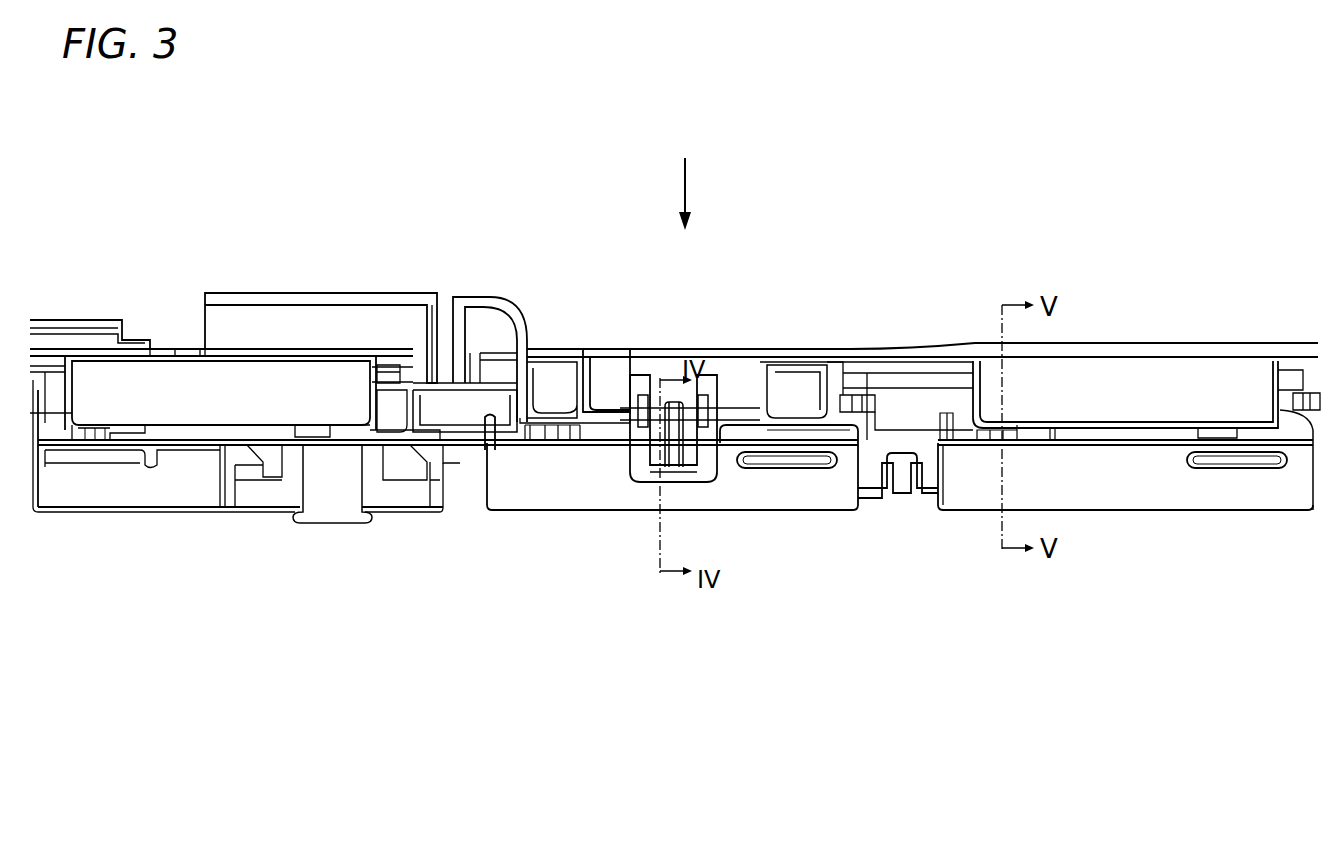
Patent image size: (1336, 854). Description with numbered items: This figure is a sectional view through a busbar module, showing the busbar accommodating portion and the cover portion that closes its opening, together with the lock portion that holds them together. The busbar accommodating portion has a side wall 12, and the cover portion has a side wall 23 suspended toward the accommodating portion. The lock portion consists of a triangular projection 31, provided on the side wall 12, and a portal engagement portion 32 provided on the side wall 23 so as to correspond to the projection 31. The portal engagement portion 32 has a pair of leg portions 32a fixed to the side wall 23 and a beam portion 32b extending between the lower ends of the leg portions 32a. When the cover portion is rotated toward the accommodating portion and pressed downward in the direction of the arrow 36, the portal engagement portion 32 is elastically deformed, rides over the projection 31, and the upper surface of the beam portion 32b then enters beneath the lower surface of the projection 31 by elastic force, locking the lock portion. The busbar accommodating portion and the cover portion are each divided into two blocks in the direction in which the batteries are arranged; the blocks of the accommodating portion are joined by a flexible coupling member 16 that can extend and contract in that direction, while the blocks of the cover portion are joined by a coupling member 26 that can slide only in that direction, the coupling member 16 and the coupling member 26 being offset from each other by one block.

The side wall 12 is at (566, 490).
The coupling member 16 is at (900, 494).
The side wall 23 is at (605, 372).
The coupling member 26 is at (447, 288).
The projection 31 is at (678, 450).
The portal engagement portion 32 is at (683, 427).
The leg portions 32a is at (705, 435).
The beam portion 32b is at (677, 480).
The arrow 36 is at (689, 182).